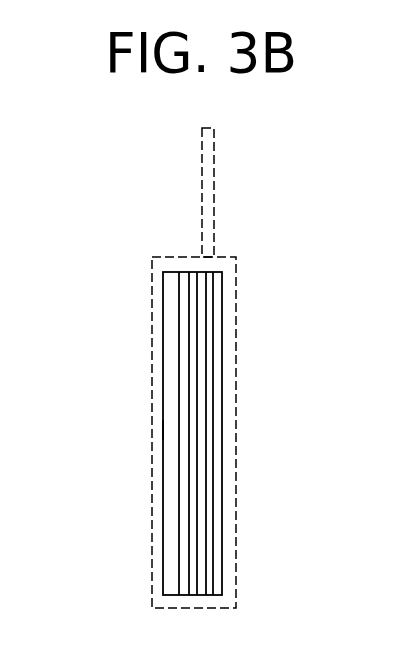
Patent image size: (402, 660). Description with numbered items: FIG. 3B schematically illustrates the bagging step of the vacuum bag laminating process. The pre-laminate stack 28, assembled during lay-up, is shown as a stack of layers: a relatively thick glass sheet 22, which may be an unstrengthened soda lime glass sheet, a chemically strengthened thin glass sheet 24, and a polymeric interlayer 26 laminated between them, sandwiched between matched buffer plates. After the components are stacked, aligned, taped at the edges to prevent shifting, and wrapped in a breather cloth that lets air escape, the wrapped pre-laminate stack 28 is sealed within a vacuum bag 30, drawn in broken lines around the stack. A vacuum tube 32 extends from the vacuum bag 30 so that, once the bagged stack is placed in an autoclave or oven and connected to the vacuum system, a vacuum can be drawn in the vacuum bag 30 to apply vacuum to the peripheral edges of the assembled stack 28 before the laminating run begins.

The glass sheet 22 is at (204, 368).
The thin glass sheet 24 is at (183, 317).
The polymeric interlayer 26 is at (193, 532).
The pre-laminate stack 28 is at (150, 430).
The vacuum bag 30 is at (236, 532).
The vacuum tube 32 is at (203, 178).